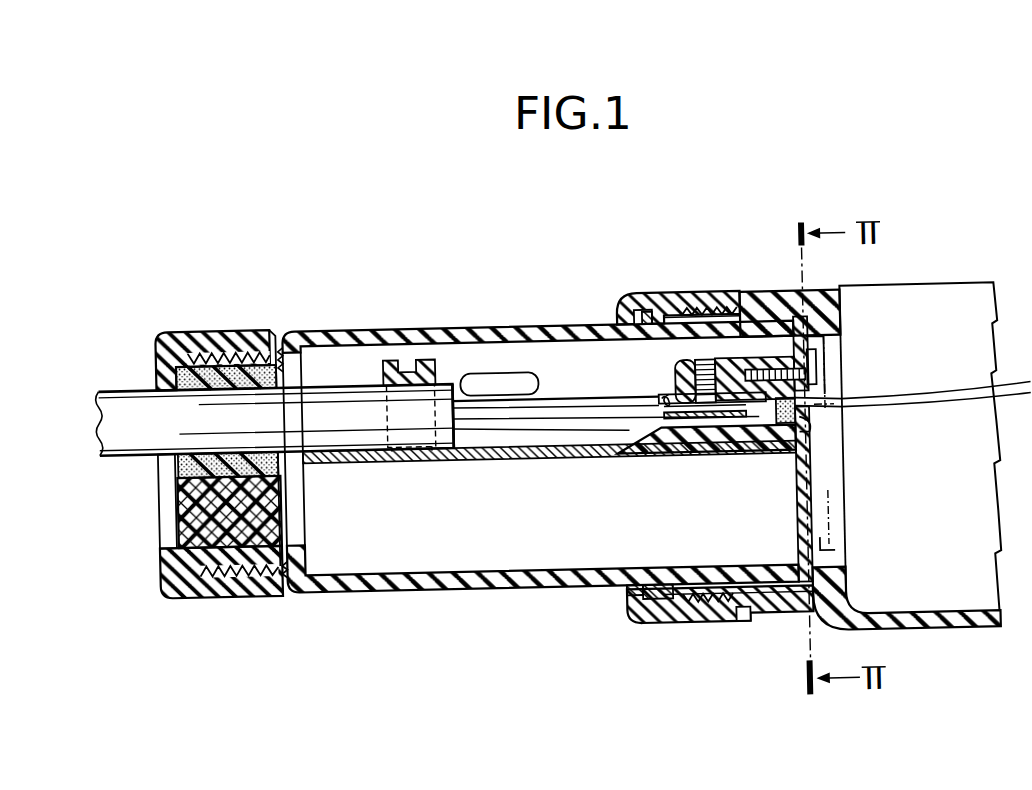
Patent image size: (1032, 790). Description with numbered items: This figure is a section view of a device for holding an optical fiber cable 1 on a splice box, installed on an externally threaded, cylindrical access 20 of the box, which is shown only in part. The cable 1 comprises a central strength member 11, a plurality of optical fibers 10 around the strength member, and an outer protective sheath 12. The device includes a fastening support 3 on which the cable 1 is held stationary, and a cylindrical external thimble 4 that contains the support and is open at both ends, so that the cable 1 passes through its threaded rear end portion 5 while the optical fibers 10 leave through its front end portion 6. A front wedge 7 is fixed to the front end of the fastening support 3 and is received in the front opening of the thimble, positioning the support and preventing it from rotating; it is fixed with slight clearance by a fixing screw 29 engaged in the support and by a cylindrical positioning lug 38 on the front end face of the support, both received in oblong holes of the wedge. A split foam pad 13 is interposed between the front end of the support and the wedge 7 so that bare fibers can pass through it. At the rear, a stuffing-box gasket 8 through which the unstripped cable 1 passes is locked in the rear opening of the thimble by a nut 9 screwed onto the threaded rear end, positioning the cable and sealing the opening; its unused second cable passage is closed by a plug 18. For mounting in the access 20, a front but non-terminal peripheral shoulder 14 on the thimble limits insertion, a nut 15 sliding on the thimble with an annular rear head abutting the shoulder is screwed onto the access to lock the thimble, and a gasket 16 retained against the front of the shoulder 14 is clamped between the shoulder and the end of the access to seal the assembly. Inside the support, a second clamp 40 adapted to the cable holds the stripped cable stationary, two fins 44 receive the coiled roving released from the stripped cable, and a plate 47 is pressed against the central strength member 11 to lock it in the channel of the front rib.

The cable 1 is at (124, 372).
The fastening support 3 is at (555, 468).
The external thimble 4 is at (528, 318).
The rear end portion 5 is at (283, 343).
The front end portion 6 is at (780, 341).
The front wedge 7 is at (812, 506).
The stuffing-box gasket 8 is at (234, 372).
The nut 9 is at (178, 326).
The optical fibers 10 is at (917, 403).
The central strength member 11 is at (620, 427).
The outer protective sheath 12 is at (447, 428).
The foam pad 13 is at (786, 445).
The peripheral shoulder 14 is at (648, 314).
The nut 15 is at (651, 623).
The gasket 16 is at (669, 308).
The plug 18 is at (202, 482).
The access 20 is at (771, 610).
The fixing screw 29 is at (814, 384).
The cylindrical positioning lug 38 is at (815, 436).
The second clamp 40 is at (446, 355).
The fins 44 is at (536, 393).
The plate 47 is at (668, 403).